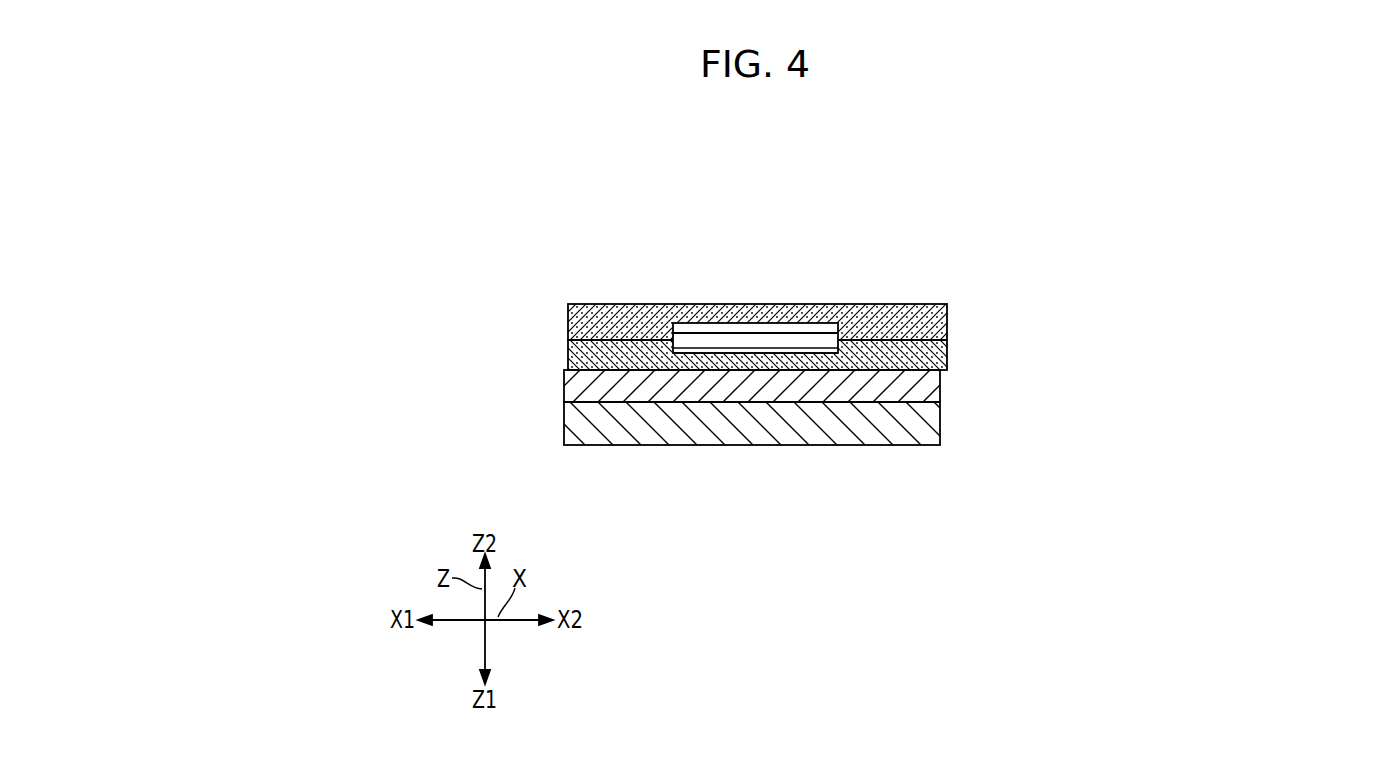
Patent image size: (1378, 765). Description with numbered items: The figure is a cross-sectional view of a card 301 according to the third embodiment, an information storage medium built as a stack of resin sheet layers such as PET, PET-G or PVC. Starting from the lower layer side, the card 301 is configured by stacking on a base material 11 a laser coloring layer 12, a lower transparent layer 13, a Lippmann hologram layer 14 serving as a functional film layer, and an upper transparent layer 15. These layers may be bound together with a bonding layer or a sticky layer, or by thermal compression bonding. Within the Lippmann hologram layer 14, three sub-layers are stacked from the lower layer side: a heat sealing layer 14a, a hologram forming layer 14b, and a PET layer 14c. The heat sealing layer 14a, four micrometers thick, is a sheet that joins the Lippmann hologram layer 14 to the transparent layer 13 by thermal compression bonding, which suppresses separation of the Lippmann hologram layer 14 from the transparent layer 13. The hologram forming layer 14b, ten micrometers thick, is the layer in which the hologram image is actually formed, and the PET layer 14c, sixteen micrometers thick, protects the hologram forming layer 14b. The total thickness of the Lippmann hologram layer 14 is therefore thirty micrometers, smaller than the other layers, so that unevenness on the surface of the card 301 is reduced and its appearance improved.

The card 301 is at (511, 183).
The transparent layer 15 is at (947, 305).
The Lippmann hologram layer 14 is at (607, 302).
The PET layer 14c is at (673, 333).
The hologram forming layer 14b is at (673, 340).
The heat sealing layer 14a is at (514, 373).
The transparent layer 13 is at (948, 356).
The laser coloring layer 12 is at (941, 393).
The base material 11 is at (942, 446).